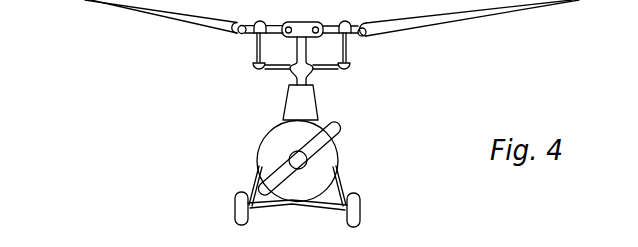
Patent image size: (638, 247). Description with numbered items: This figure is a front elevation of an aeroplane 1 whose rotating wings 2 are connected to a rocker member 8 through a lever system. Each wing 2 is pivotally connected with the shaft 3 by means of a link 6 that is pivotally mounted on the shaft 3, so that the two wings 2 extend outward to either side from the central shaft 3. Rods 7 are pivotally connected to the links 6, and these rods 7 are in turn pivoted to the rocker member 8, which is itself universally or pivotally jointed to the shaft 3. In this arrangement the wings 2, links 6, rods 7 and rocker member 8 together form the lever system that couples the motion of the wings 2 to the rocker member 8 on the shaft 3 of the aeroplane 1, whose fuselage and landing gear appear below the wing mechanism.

The aircraft 1 is at (328, 149).
The wings 2 is at (400, 22).
The shaft 3 is at (300, 49).
The links 6 is at (323, 32).
The rods 7 is at (346, 58).
The rocker member 8 is at (326, 70).